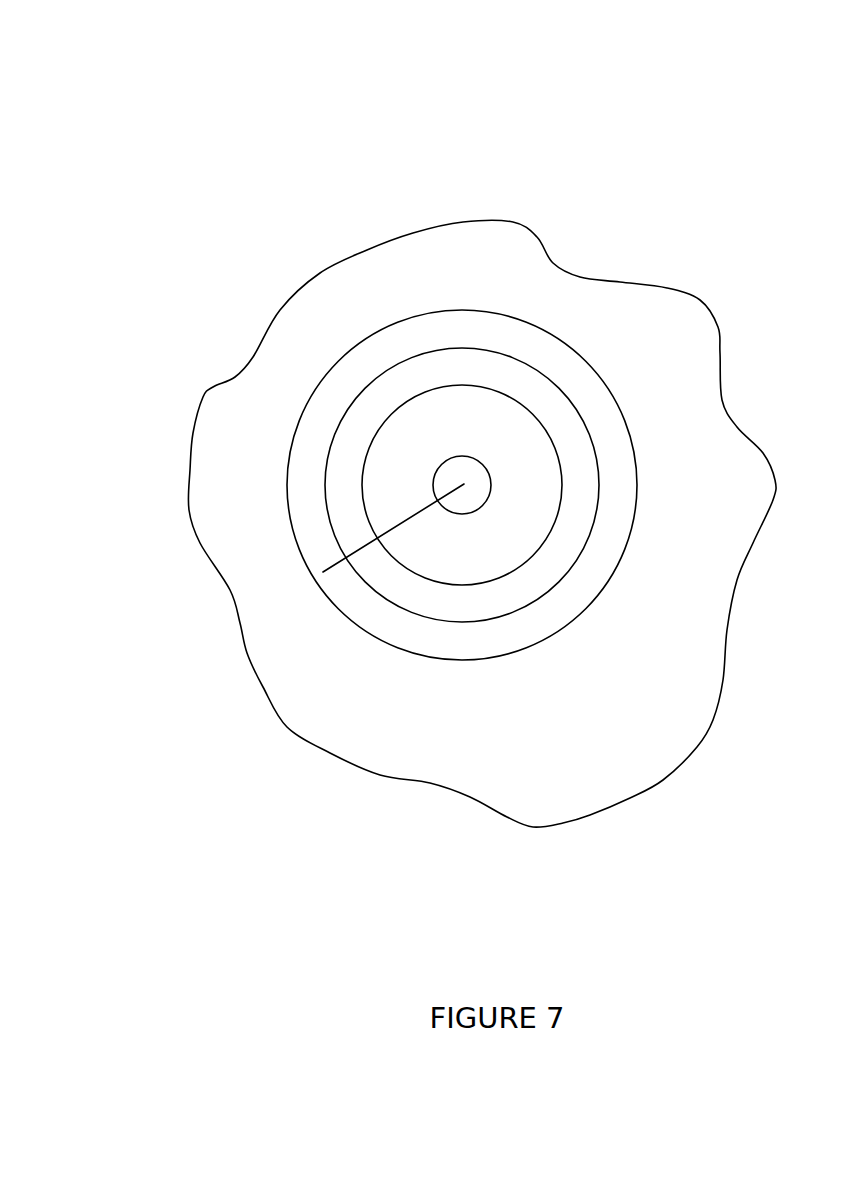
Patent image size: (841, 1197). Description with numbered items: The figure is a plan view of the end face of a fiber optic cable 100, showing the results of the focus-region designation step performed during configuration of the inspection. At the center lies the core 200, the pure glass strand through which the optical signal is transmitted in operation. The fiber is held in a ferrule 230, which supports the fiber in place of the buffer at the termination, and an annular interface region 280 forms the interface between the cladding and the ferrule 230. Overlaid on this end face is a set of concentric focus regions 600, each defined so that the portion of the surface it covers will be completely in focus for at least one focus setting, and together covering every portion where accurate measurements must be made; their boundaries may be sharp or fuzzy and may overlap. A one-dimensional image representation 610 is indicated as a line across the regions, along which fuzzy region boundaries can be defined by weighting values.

The fiber optic cable 100 is at (84, 67).
The core 200 is at (475, 475).
The ferrule 230 is at (363, 747).
The annular interface region 280 is at (443, 662).
The focus regions 600 is at (453, 470).
The one-dimensional image representation 610 is at (368, 545).